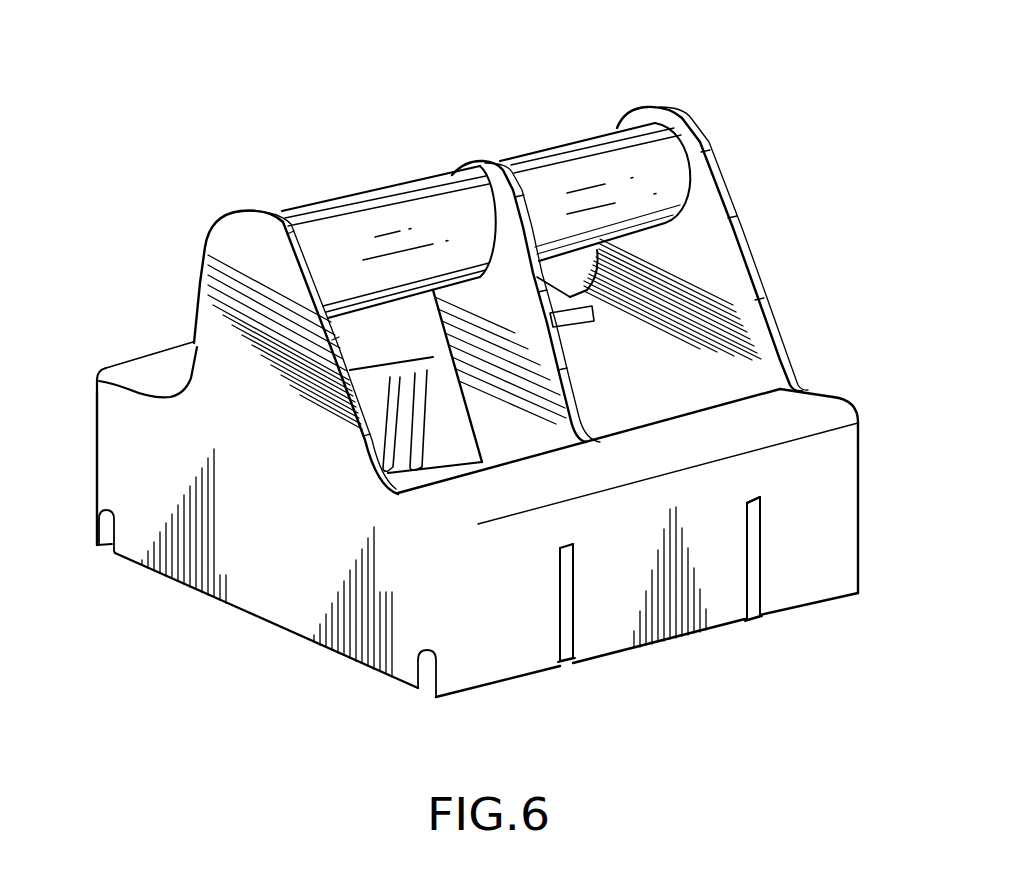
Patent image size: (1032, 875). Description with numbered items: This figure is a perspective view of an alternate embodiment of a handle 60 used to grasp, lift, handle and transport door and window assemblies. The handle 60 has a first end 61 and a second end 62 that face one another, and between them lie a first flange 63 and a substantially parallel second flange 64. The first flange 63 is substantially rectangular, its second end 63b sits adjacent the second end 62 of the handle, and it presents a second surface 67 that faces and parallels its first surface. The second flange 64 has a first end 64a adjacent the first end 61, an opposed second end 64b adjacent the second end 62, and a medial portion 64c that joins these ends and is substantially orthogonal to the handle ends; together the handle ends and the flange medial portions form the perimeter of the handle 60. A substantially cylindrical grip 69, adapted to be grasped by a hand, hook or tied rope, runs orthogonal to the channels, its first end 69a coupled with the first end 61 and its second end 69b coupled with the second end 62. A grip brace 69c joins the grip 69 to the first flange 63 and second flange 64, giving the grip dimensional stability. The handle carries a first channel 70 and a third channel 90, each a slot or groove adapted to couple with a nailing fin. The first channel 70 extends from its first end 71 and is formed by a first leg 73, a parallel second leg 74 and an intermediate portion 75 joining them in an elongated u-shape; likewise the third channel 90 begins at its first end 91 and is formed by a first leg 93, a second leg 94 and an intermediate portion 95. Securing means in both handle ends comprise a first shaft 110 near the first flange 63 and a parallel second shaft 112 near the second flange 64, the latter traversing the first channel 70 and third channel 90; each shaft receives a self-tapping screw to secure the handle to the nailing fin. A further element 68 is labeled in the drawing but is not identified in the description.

The handle 60 is at (848, 274).
The first end 61 is at (732, 186).
The second end 62 is at (265, 596).
The first flange 63 is at (178, 378).
The second end of first flange 63b is at (120, 380).
The second flange 64 is at (752, 417).
The first end of second flange 64a is at (805, 385).
The second end of second flange 64b is at (430, 508).
The medial portion of second flange 64c is at (680, 618).
The second surface 67 is at (143, 363).
The ledge 68 is at (683, 457).
The grip 69 is at (548, 128).
The first end of grip 69a is at (636, 150).
The second end of grip 69b is at (343, 230).
The grip brace 69c is at (513, 319).
The first channel 70 is at (753, 620).
The first end of first channel 71 is at (753, 572).
The first leg 73 is at (767, 594).
The second leg 74 is at (747, 622).
The intermediate portion 75 is at (755, 499).
The third channel 90 is at (562, 668).
The first end of third channel 91 is at (572, 662).
The first leg 93 is at (575, 643).
The second leg 94 is at (553, 645).
The intermediate portion 95 is at (556, 546).
The first shaft 110 is at (103, 550).
The second shaft 112 is at (427, 690).